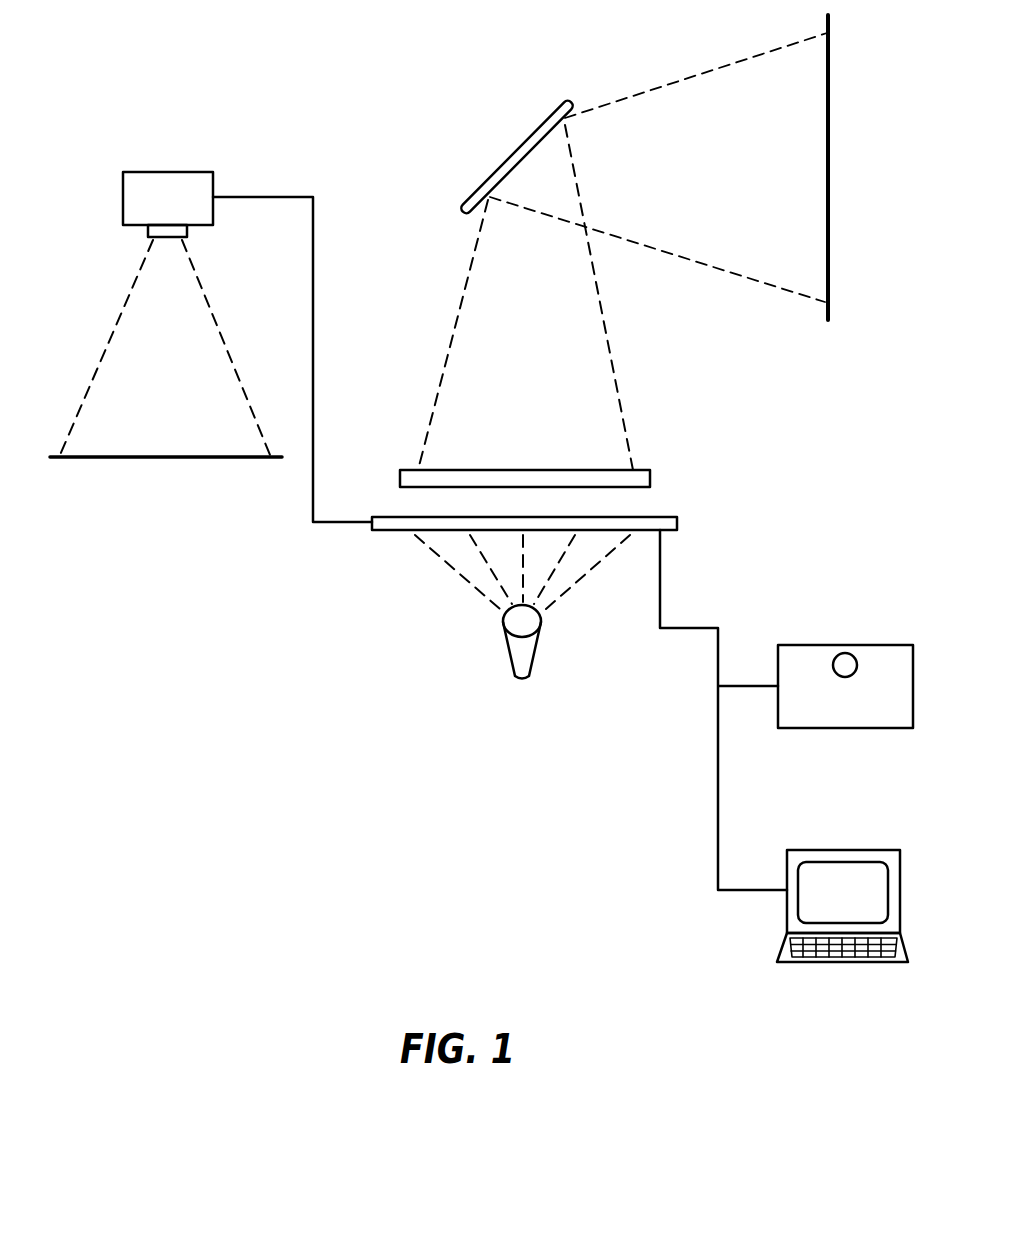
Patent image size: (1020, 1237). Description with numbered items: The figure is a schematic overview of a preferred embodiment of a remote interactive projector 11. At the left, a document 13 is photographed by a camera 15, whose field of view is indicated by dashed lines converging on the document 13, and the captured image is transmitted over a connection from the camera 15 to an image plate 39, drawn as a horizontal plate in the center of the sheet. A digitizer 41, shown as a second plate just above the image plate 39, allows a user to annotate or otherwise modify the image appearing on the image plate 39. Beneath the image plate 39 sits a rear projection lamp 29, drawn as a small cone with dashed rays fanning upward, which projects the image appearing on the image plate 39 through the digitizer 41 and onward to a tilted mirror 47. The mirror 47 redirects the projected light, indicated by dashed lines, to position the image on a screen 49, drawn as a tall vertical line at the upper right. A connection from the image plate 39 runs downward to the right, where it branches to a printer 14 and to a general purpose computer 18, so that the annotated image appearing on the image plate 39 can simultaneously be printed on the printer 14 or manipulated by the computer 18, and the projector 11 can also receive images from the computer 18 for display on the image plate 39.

The remote interactive projector 11 is at (342, 638).
The document 13 is at (150, 460).
The printer 14 is at (878, 645).
The camera 15 is at (185, 172).
The general purpose computer 18 is at (820, 850).
The rear projection lamp 29 is at (538, 650).
The image plate 39 is at (680, 522).
The digitizer 41 is at (652, 478).
The mirror 47 is at (527, 142).
The screen 49 is at (828, 138).